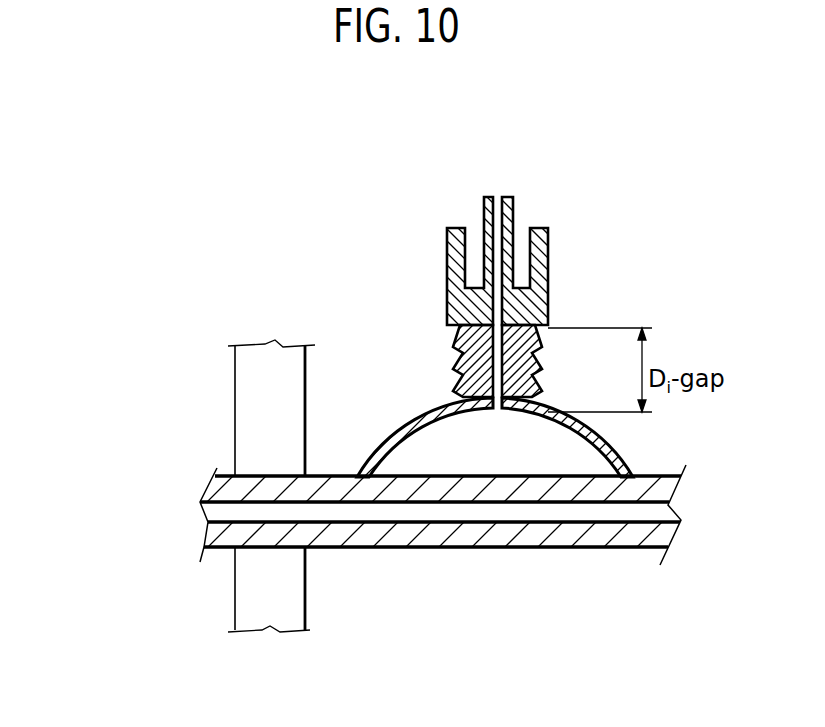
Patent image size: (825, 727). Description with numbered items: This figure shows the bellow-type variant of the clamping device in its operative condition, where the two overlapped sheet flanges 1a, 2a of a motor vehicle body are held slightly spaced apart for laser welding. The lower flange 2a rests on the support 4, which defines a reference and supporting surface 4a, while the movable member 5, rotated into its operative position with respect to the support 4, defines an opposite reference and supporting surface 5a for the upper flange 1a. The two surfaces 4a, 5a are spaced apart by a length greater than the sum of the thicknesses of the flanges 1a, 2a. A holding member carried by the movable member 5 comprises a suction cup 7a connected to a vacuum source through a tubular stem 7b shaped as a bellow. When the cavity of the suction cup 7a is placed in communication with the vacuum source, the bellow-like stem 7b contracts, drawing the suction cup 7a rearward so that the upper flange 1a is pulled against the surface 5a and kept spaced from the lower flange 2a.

The movable member 5 is at (548, 254).
The reference and supporting surface 5a is at (265, 483).
The tubular stem 7b is at (455, 352).
The suction cup 7a is at (615, 448).
The flange 1a is at (660, 490).
The flange 2a is at (652, 538).
The support 4 is at (307, 600).
The reference and supporting surface 4a is at (221, 548).